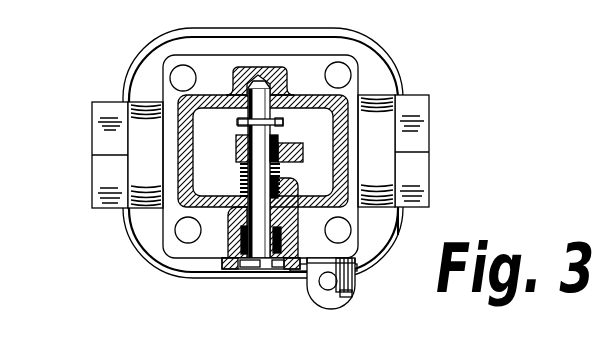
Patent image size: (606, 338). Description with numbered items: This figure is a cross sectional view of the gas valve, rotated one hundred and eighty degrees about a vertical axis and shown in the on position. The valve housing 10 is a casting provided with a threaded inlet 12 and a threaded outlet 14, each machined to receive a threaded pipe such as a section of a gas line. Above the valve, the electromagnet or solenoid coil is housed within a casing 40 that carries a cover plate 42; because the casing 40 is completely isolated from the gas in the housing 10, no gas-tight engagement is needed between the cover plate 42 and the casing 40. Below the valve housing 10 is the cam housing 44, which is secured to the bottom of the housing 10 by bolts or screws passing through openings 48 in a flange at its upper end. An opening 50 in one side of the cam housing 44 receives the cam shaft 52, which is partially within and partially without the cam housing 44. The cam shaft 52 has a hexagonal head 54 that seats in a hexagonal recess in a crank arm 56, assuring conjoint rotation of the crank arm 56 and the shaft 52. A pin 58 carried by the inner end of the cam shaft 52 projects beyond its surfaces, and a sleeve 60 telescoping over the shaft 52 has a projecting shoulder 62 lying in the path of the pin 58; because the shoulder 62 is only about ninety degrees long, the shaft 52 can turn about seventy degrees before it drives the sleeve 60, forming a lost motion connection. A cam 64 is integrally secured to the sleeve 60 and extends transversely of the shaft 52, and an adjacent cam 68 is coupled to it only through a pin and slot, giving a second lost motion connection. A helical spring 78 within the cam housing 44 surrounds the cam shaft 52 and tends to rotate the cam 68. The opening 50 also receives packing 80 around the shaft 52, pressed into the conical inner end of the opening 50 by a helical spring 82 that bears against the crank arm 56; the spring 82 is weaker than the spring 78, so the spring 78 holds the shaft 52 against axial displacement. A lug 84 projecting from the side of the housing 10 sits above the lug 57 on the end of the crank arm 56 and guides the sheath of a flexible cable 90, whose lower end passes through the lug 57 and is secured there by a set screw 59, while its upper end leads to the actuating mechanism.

The valve housing 10 is at (110, 114).
The threaded inlet 12 is at (92, 163).
The threaded outlet 14 is at (430, 170).
The casing 40 is at (137, 212).
The cover plate 42 is at (128, 235).
The cam housing 44 is at (360, 85).
The openings 48 is at (175, 72).
The opening 50 is at (231, 252).
The cam shaft 52 is at (293, 72).
The hexagonal head 54 is at (262, 262).
The crank arm 56 is at (306, 272).
The lug 57 is at (354, 282).
The pin 58 is at (280, 123).
The set screw 59 is at (336, 293).
The sleeve 60 is at (236, 138).
The projecting shoulder 62 is at (238, 122).
The cam 64 is at (284, 142).
The cam 68 is at (290, 160).
The helical spring 78 is at (241, 178).
The packing 80 is at (401, 222).
The helical spring 82 is at (357, 260).
The lug 84 is at (316, 293).
The flexible cable 90 is at (348, 297).